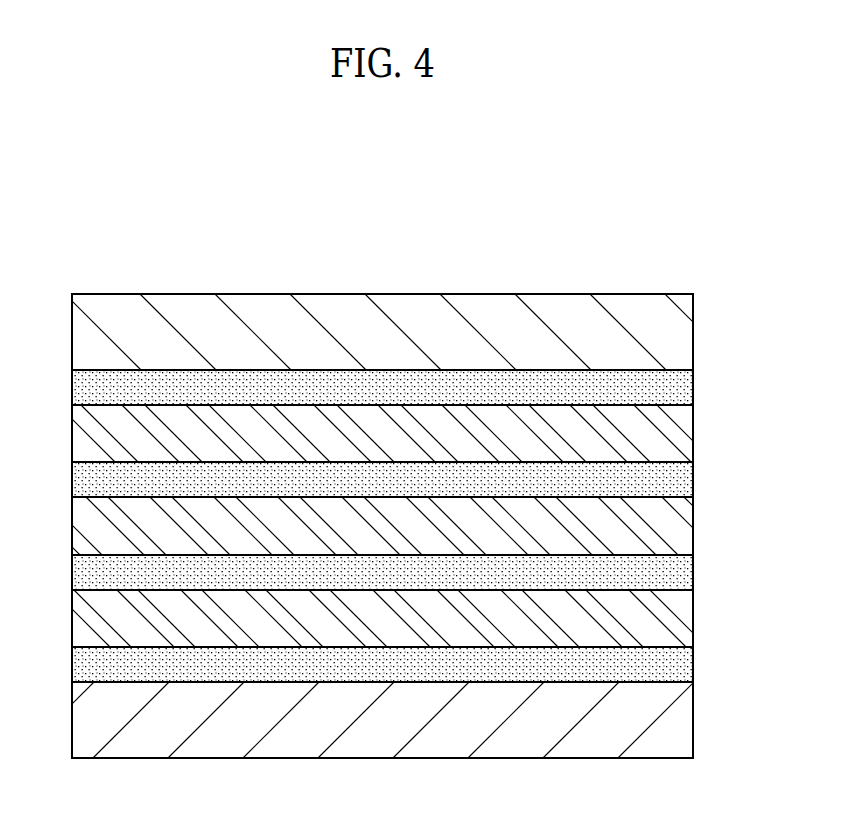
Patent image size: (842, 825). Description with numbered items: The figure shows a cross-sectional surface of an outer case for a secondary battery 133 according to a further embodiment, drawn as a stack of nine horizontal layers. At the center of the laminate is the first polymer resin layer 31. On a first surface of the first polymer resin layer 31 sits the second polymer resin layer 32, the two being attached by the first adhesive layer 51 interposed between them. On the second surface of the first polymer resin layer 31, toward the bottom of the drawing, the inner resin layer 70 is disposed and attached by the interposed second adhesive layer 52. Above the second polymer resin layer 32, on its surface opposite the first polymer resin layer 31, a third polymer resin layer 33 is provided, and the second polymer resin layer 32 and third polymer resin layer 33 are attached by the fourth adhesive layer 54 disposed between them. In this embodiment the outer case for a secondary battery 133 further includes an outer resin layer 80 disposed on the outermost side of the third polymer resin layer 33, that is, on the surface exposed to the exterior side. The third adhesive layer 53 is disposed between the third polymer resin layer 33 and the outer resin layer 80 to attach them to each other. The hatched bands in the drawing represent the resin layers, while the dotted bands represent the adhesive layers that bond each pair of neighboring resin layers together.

The outer case for a secondary battery 133 is at (400, 223).
The outer resin layer 80 is at (677, 335).
The third adhesive layer 53 is at (677, 392).
The third polymer resin layer 33 is at (677, 439).
The fourth adhesive layer 54 is at (677, 484).
The second polymer resin layer 32 is at (677, 532).
The first adhesive layer 51 is at (677, 575).
The first polymer resin layer 31 is at (677, 624).
The second adhesive layer 52 is at (677, 669).
The inner resin layer 70 is at (677, 722).